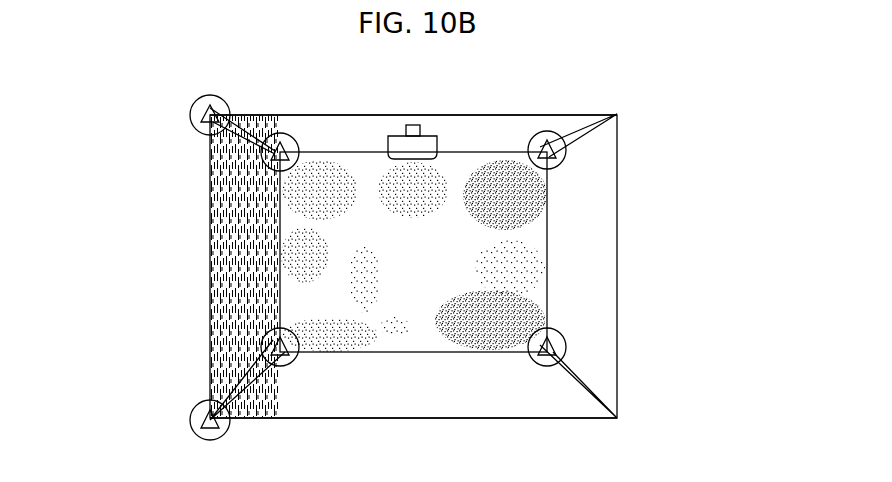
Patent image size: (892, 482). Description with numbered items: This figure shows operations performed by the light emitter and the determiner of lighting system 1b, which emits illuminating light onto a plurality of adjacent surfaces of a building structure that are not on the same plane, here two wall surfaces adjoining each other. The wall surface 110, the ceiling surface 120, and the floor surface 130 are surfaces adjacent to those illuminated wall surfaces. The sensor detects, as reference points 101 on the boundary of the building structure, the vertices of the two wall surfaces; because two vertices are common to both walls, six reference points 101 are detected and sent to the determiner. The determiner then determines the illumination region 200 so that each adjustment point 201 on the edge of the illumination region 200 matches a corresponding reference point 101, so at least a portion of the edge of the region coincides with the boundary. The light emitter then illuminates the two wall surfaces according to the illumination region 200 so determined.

The lighting system 1b is at (428, 128).
The reference point 101 is at (190, 115).
The wall surface 110 is at (580, 268).
The ceiling surface 120 is at (488, 130).
The floor surface 130 is at (523, 397).
The illumination region 200 is at (253, 233).
The adjustment point 201 is at (202, 110).